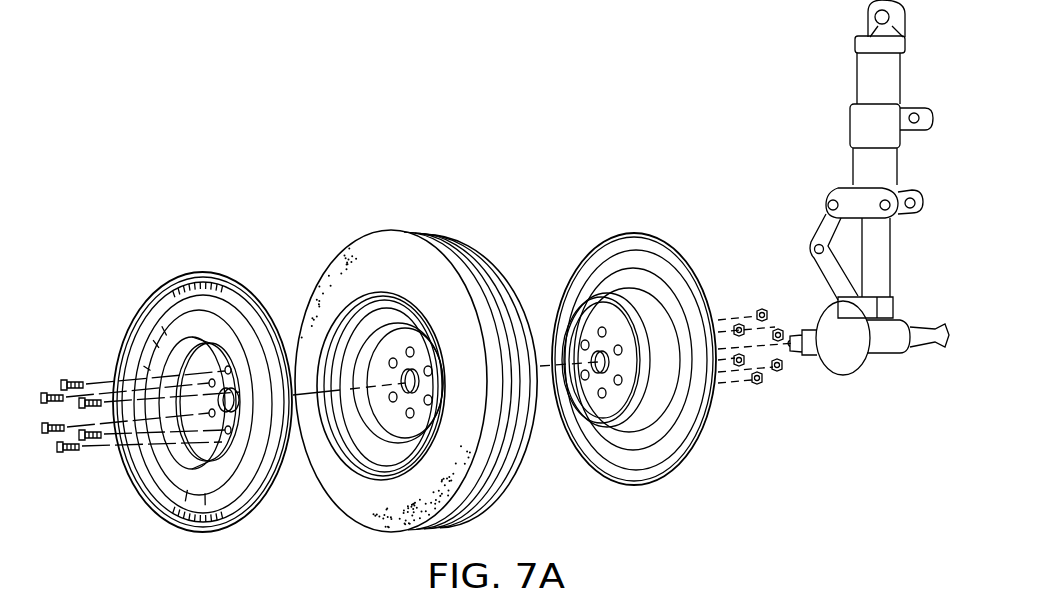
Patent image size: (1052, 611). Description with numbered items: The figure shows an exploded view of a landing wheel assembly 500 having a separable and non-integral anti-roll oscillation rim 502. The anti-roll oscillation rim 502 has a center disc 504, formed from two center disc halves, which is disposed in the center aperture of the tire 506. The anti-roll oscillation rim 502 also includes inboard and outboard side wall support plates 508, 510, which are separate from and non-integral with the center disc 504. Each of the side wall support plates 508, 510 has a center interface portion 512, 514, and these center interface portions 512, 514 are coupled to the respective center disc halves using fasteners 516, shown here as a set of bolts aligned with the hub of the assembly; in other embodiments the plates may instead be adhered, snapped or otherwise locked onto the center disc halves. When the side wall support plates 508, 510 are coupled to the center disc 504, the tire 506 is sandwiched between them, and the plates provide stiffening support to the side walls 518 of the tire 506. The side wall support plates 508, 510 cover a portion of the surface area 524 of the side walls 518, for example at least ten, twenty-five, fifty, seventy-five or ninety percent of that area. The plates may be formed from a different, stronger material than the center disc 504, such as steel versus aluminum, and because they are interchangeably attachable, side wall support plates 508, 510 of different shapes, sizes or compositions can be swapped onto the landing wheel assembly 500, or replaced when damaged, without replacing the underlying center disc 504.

The landing wheel assembly 500 is at (221, 168).
The anti-roll oscillation rim 502 is at (604, 226).
The center disc 504 is at (368, 320).
The tire 506 is at (418, 228).
The inboard side wall support plate 508 is at (647, 231).
The outboard side wall support plate 510 is at (165, 281).
The center interface portion 512 is at (593, 405).
The center interface portion 514 is at (220, 440).
The fasteners 516 is at (76, 378).
The side walls 518 is at (378, 507).
The surface area 524 is at (337, 485).